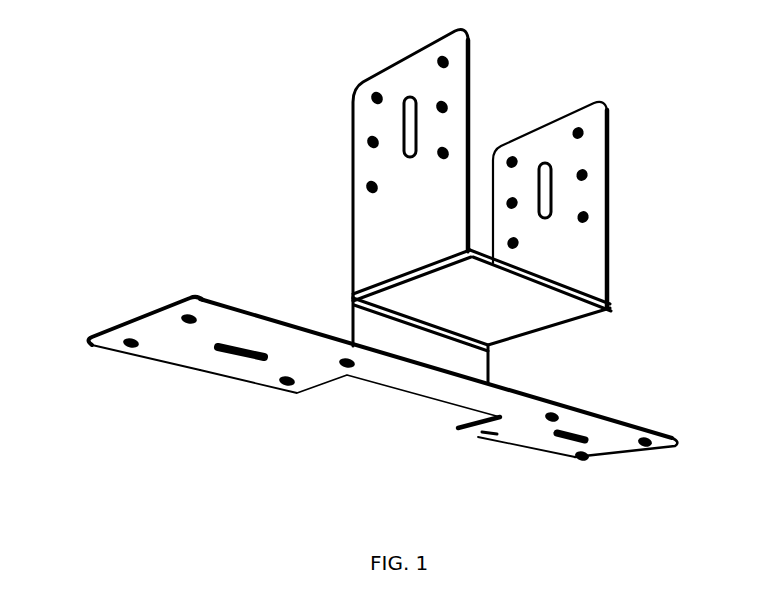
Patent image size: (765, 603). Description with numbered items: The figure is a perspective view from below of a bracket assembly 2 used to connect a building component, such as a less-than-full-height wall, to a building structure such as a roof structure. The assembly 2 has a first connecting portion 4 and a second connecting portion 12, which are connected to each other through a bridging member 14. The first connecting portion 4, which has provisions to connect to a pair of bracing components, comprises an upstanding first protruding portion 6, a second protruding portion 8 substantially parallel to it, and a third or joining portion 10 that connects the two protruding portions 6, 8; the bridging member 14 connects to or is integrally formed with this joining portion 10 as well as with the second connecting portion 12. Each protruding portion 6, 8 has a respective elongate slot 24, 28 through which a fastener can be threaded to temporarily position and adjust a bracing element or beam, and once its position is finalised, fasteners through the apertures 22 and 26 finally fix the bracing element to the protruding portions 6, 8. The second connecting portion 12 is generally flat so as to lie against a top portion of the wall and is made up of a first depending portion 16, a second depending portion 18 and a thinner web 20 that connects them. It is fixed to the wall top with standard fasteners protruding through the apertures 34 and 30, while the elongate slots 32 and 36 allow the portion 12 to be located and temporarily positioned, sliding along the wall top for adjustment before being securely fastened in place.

The bracket assembly 2 is at (722, 213).
The first connecting portion 4 is at (338, 56).
The first protruding portion 6 is at (350, 240).
The second protruding portion 8 is at (603, 104).
The joining portion 10 is at (572, 327).
The second connecting portion 12 is at (200, 409).
The bridging member 14 is at (352, 320).
The first depending portion 16 is at (88, 337).
The second depending portion 18 is at (623, 455).
The web 20 is at (413, 398).
The apertures 22 is at (368, 182).
The elongate slot 24 is at (411, 160).
The apertures 26 is at (605, 213).
The elongate slot 28 is at (543, 163).
The apertures 30 is at (652, 448).
The elongate slot 32 is at (578, 434).
The apertures 34 is at (182, 314).
The elongate slot 36 is at (220, 352).